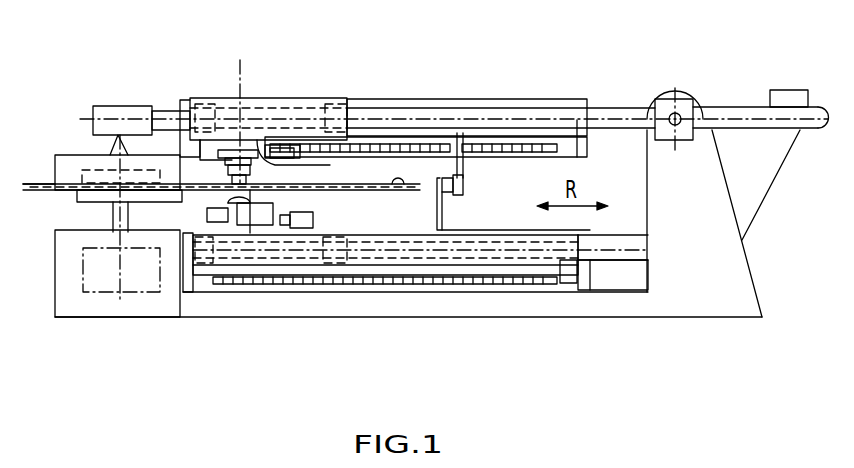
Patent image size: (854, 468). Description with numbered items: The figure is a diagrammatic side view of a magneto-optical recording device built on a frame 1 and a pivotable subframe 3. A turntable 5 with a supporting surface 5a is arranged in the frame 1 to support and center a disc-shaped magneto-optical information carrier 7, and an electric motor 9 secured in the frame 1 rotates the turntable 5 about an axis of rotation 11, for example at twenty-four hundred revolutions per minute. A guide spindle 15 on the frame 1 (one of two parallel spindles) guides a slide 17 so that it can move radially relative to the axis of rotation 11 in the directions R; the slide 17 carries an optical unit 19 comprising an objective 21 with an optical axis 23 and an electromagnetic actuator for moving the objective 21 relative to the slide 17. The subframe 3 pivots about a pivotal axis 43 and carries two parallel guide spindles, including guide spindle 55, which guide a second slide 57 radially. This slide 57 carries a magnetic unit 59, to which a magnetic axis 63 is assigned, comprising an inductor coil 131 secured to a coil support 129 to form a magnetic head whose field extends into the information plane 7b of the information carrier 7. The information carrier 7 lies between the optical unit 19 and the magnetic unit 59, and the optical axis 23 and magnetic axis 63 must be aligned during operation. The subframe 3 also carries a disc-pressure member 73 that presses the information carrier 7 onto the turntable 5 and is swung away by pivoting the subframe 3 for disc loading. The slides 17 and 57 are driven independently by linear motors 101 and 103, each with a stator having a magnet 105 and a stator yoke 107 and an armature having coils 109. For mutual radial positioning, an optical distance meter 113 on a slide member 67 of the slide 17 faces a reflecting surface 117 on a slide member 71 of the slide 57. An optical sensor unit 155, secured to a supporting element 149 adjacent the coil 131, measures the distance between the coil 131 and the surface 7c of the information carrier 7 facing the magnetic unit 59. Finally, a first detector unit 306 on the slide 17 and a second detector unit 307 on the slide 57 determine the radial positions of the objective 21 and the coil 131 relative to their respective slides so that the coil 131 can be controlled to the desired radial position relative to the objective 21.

The frame 1 is at (710, 300).
The pivotable subframe 3 is at (630, 133).
The turntable 5 is at (60, 198).
The supporting surface 5a is at (78, 203).
The magneto-optical information carrier 7 is at (420, 186).
The information plane 7b is at (99, 169).
The surface of the information carrier 7c is at (398, 185).
The electric motor 9 is at (104, 292).
The axis of rotation 11 is at (112, 150).
The guide spindle 15 is at (623, 250).
The slide 17 is at (273, 228).
The optical unit 19 is at (250, 233).
The objective 21 is at (245, 200).
The optical axis 23 is at (213, 217).
The pivotal axis 43 is at (687, 100).
The guide spindle 55 is at (620, 112).
The slide 57 is at (113, 110).
The magnetic unit 59 is at (280, 147).
The magnetic axis 63 is at (243, 60).
The slide member 67 is at (356, 270).
The slide member 71 is at (415, 147).
The disc-pressure member 73 is at (62, 155).
The linear motor 101 is at (190, 292).
The linear motor 103 is at (187, 153).
The magnet 105 is at (530, 153).
The stator yoke 107 is at (515, 103).
The coils 109 is at (222, 135).
The optical distance meter 113 is at (463, 176).
The reflecting surface 117 is at (462, 193).
The coil support 129 is at (243, 150).
The inductor coil 131 is at (300, 140).
The supporting element 149 is at (213, 127).
The optical sensor unit 155 is at (173, 202).
The first detector unit 306 is at (300, 228).
The second detector unit 307 is at (322, 100).